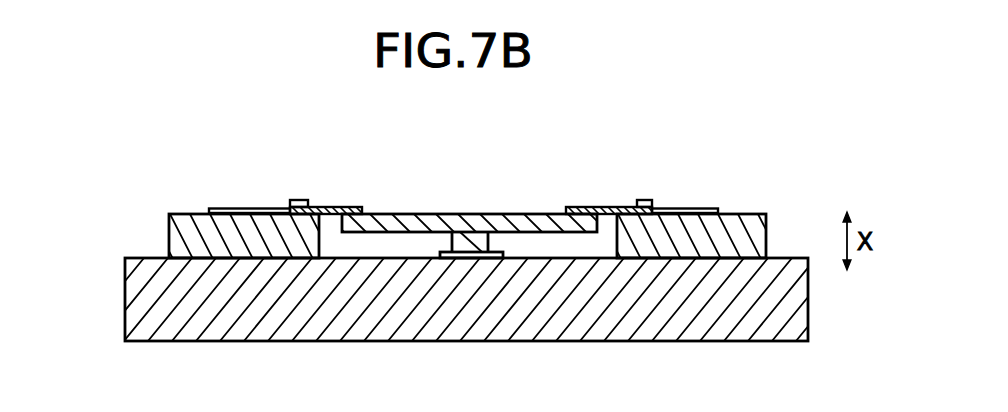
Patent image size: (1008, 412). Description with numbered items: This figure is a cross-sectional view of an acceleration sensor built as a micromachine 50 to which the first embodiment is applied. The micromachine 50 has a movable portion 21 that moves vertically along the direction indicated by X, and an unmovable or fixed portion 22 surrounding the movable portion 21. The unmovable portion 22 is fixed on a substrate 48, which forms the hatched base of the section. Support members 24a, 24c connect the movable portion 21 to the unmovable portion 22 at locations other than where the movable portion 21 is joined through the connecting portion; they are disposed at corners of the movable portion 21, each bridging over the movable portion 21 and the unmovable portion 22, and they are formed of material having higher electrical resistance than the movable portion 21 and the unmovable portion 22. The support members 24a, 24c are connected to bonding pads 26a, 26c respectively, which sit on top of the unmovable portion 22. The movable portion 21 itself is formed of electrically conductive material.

The micromachine 50 is at (52, 328).
The substrate 48 is at (802, 313).
The unmovable portion 22 is at (193, 212).
The movable portion 21 is at (470, 212).
The bonding pad 26c is at (252, 212).
The support member 24c is at (342, 207).
The support member 24a is at (603, 207).
The bonding pad 26a is at (685, 208).